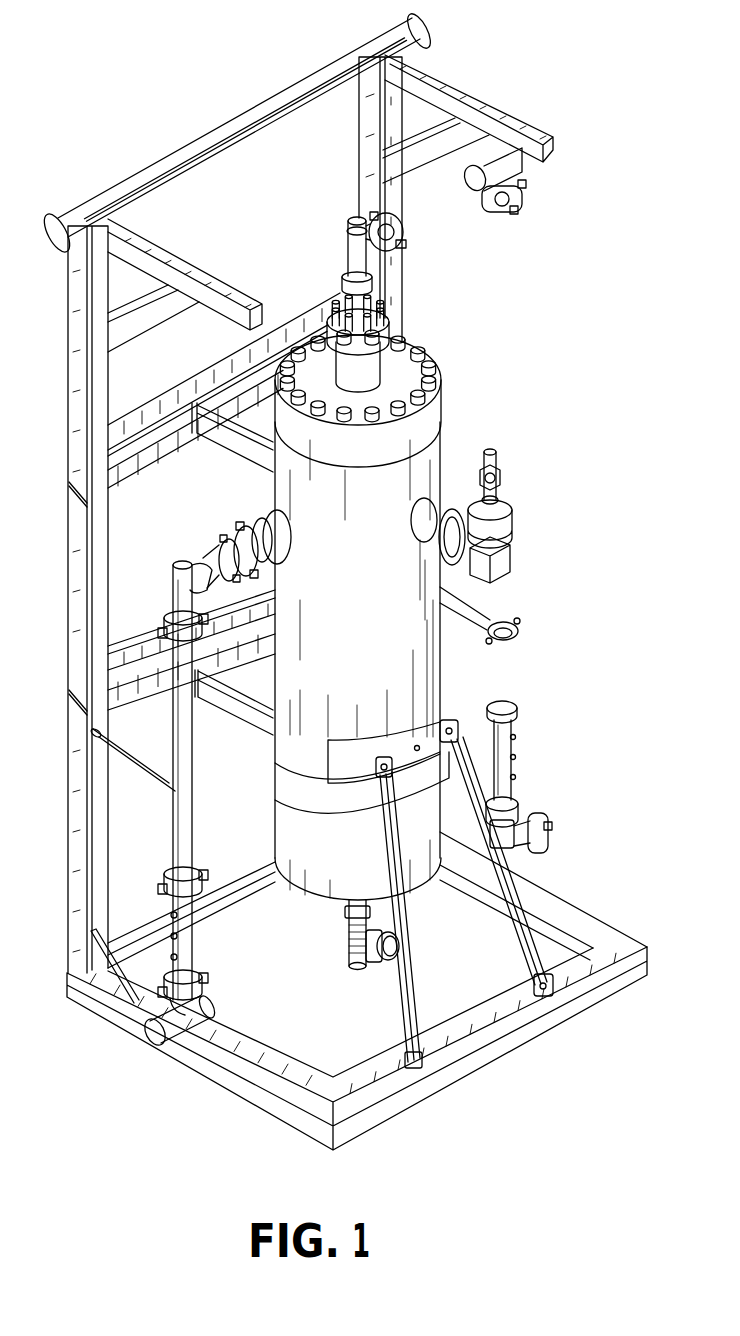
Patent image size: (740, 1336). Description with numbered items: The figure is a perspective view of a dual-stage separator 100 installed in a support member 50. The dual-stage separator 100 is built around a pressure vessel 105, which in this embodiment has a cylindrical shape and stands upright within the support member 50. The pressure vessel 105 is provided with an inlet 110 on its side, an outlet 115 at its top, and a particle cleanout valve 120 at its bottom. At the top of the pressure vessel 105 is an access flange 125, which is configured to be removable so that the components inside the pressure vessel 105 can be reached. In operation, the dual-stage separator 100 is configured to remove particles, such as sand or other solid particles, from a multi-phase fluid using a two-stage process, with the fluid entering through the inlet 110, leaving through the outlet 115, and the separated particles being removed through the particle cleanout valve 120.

The support member 50 is at (244, 110).
The dual-stage separator 100 is at (490, 309).
The pressure vessel 105 is at (434, 646).
The inlet 110 is at (207, 553).
The outlet 115 is at (349, 218).
The particle cleanout valve 120 is at (348, 966).
The access flange 125 is at (434, 400).